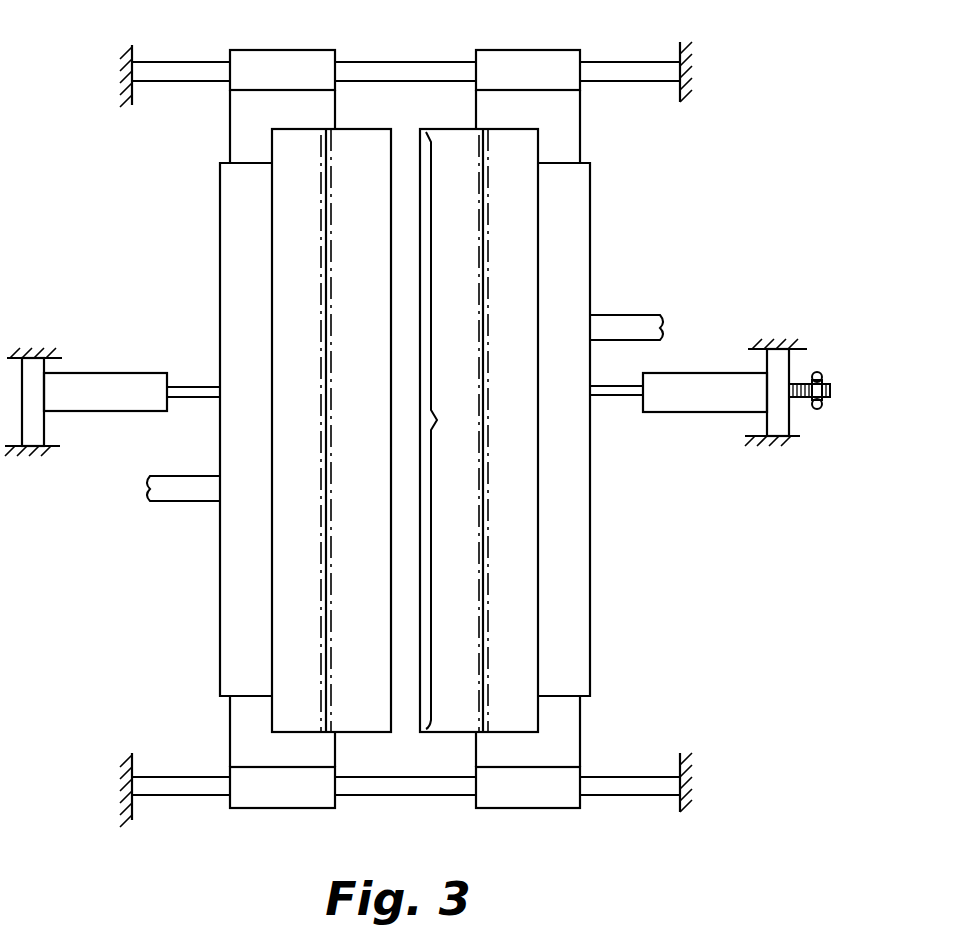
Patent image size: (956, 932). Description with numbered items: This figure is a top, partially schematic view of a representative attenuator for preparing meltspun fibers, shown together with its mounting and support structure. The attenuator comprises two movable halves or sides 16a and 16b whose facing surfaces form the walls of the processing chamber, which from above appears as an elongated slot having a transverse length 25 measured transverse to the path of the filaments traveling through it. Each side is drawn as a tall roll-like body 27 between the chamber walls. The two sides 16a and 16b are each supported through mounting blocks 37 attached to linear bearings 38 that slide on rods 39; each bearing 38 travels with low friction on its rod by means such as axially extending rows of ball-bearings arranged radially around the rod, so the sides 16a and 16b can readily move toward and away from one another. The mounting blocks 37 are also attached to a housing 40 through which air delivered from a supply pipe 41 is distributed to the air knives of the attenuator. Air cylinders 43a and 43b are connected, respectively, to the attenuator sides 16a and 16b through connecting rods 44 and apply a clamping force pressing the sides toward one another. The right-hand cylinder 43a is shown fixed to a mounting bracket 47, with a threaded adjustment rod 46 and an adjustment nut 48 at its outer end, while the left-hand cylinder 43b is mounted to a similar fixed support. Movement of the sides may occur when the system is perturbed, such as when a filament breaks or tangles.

The attenuator side 16a is at (630, 188).
The attenuator side 16b is at (172, 226).
The transverse length 25 is at (450, 430).
The roll 27 is at (281, 459).
The mounting block 37 is at (243, 113).
The linear bearing 38 is at (277, 60).
The rod 39 is at (180, 65).
The housing 40 is at (230, 298).
The supply pipe 41 is at (178, 492).
The air cylinder 43a is at (690, 383).
The air cylinder 43b is at (103, 380).
The connecting rod 44 is at (200, 393).
The threaded adjustment rod 46 is at (830, 388).
The mounting bracket 47 is at (784, 422).
The adjustment nut 48 is at (817, 375).